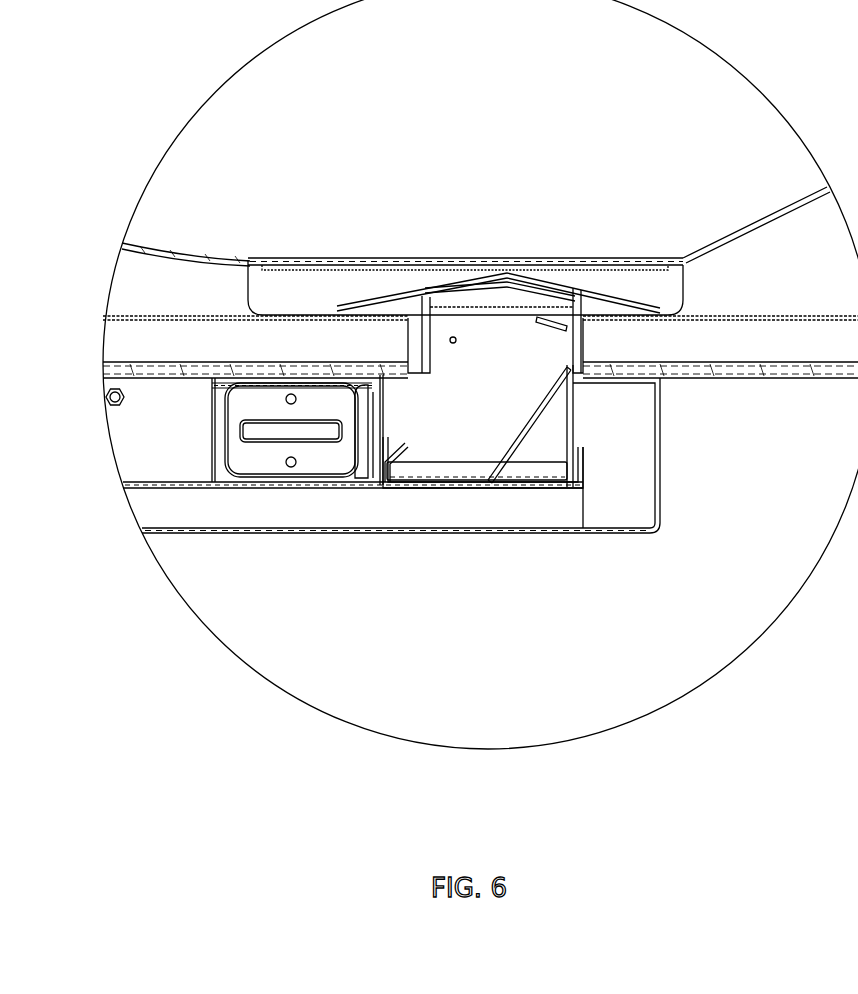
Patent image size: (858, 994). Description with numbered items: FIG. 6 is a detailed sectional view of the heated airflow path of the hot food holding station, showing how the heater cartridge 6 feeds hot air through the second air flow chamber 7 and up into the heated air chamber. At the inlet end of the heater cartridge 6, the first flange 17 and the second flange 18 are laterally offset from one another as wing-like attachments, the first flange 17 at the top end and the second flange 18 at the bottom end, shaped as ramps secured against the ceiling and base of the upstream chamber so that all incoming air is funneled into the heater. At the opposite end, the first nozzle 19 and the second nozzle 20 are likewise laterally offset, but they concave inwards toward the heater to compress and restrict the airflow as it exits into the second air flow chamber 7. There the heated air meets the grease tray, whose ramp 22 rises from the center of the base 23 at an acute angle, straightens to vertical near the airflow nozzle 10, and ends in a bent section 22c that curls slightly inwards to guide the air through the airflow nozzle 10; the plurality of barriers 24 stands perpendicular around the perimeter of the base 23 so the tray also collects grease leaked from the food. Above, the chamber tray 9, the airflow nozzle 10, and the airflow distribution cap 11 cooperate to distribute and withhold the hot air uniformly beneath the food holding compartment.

The heater cartridge 6 is at (330, 457).
The second air flow chamber 7 is at (554, 438).
The chamber tray 9 is at (790, 356).
The airflow nozzle 10 is at (573, 288).
The airflow distribution cap 11 is at (393, 293).
The first flange 17 is at (200, 378).
The second flange 18 is at (203, 481).
The first nozzle 19 is at (361, 412).
The second nozzle 20 is at (398, 454).
The ramp 22 is at (508, 424).
The bent section 22c is at (555, 325).
The base 23 is at (542, 473).
The plurality of barriers 24 is at (375, 448).